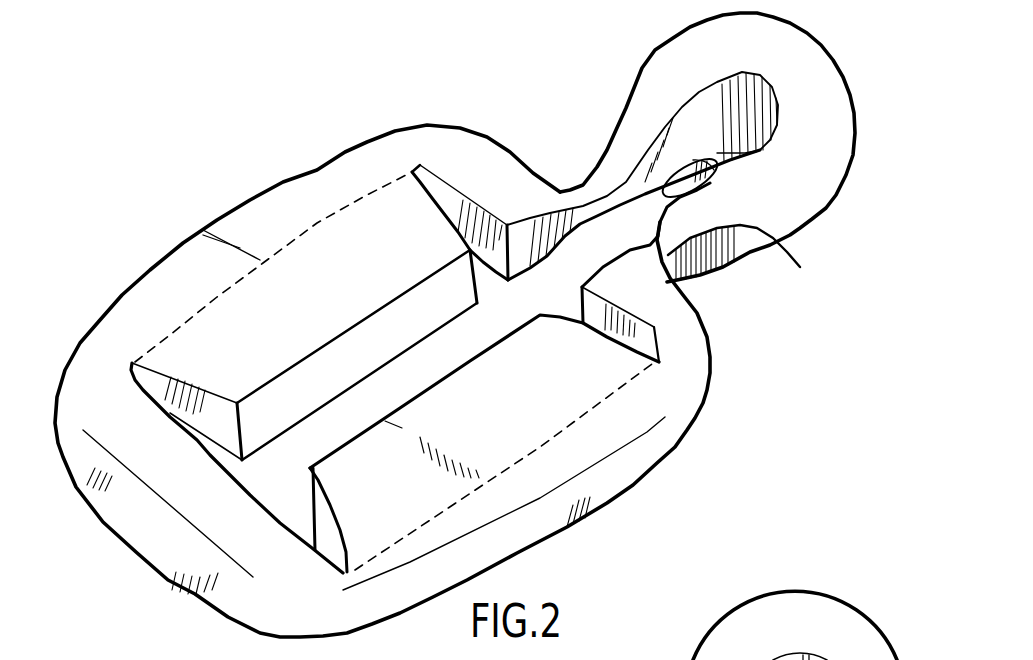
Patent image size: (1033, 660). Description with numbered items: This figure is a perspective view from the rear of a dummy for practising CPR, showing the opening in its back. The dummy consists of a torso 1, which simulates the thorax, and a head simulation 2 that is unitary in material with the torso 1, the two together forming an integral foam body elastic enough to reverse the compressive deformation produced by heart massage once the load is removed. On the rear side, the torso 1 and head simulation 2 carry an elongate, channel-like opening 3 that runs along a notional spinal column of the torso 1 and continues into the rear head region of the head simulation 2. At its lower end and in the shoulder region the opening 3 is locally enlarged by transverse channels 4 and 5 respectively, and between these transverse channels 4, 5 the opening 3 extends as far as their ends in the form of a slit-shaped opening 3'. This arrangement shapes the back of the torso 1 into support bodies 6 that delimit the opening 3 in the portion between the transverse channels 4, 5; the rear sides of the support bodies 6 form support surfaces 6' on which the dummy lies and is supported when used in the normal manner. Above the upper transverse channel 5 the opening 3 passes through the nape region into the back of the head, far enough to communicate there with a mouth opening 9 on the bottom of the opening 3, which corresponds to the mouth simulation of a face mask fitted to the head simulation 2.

The torso 1 is at (277, 623).
The head simulation 2 is at (643, 73).
The opening 3 is at (395, 411).
The slit-shaped opening 3' is at (393, 371).
The transverse channel 4 is at (329, 537).
The transverse channel 5 is at (647, 325).
The support bodies 6 is at (432, 331).
The support surfaces 6' is at (426, 365).
The mouth opening 9 is at (702, 188).